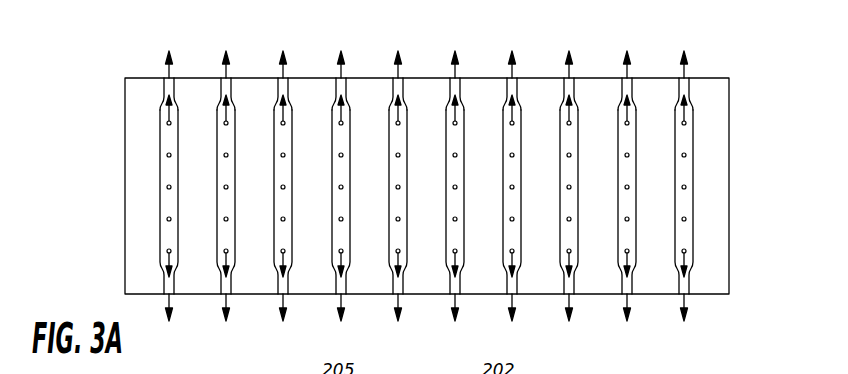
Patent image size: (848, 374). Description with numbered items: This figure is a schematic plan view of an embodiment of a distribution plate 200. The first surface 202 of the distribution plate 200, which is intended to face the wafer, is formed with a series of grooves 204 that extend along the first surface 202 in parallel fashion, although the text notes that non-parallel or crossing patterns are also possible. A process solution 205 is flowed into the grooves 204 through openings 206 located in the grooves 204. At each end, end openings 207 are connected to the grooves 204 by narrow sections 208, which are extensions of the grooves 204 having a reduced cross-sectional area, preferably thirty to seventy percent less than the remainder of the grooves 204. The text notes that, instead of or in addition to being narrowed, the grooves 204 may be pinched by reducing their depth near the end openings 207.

The distribution plate 200 is at (730, 127).
The first surface 202 is at (714, 248).
The grooves 204 is at (295, 125).
The process solution 205 is at (232, 78).
The openings 206 is at (173, 123).
The end openings 207 is at (175, 78).
The narrow sections 208 is at (163, 82).